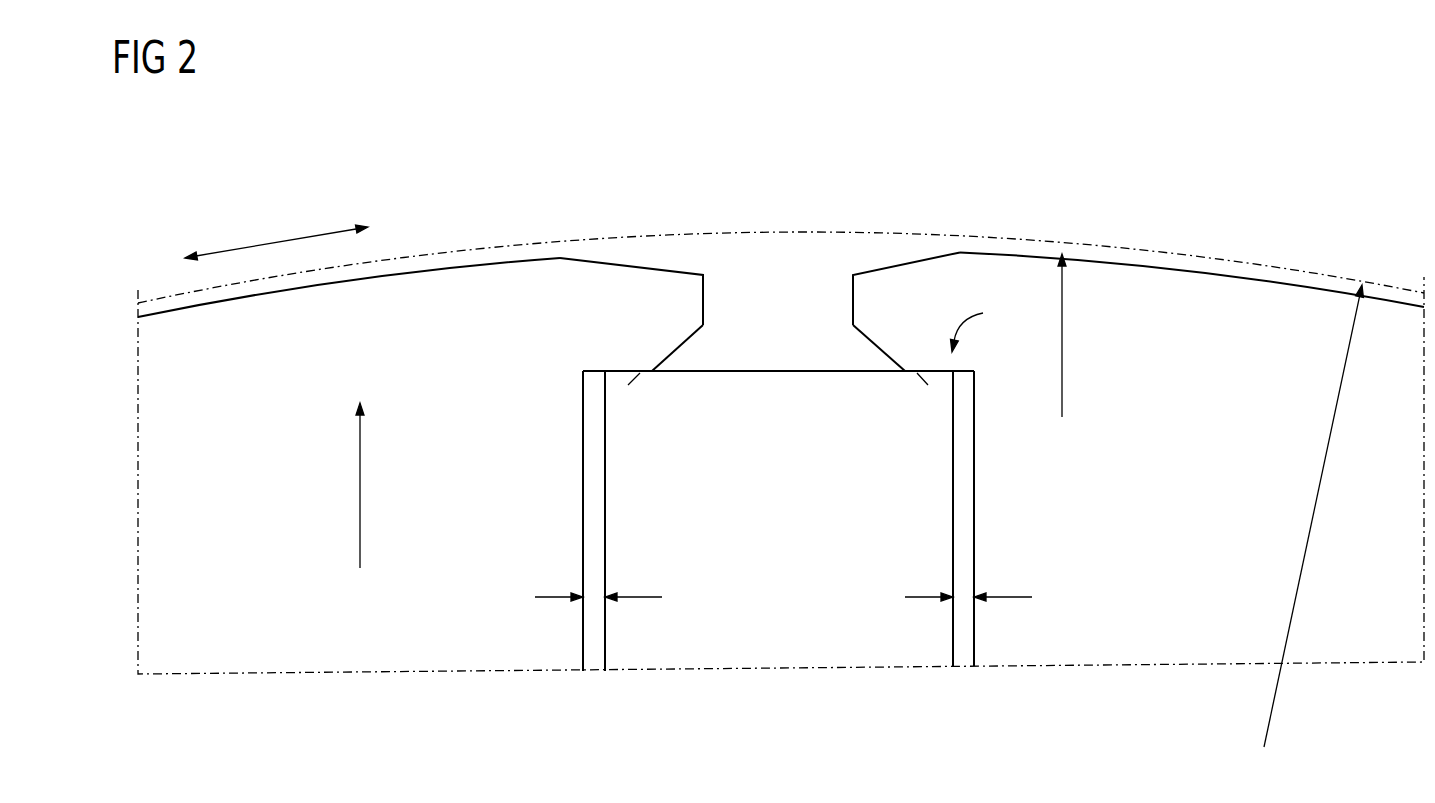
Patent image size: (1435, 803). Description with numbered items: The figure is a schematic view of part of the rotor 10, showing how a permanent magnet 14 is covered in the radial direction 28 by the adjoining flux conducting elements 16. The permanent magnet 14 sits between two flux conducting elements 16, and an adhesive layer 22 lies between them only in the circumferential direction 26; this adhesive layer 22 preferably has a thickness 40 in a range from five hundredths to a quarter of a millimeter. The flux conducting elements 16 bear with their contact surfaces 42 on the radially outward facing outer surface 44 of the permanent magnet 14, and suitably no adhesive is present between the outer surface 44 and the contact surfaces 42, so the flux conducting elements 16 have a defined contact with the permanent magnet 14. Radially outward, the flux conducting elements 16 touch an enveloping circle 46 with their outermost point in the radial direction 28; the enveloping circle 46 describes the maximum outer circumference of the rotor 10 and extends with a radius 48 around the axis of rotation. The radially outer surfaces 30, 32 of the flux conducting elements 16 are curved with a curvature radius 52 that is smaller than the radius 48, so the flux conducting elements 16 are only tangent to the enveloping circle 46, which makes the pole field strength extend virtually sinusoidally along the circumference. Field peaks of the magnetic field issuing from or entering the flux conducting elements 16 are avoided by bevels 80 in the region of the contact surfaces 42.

The rotor 10 is at (394, 122).
The permanent magnet 14 is at (630, 480).
The flux conducting element 16 is at (438, 285).
The adhesive layer 22 is at (595, 525).
The circumferential direction 26 is at (273, 240).
The radial direction 28 is at (360, 503).
The radially outer surface 30 is at (625, 260).
The radially outer surface 32 is at (948, 257).
The thickness 40 is at (633, 592).
The contact surface 42 is at (634, 378).
The outer surface 44 is at (627, 370).
The enveloping circle 46 is at (795, 235).
The radius 48 is at (1333, 418).
The curvature radius 52 is at (1062, 377).
The bevel 80 is at (690, 360).